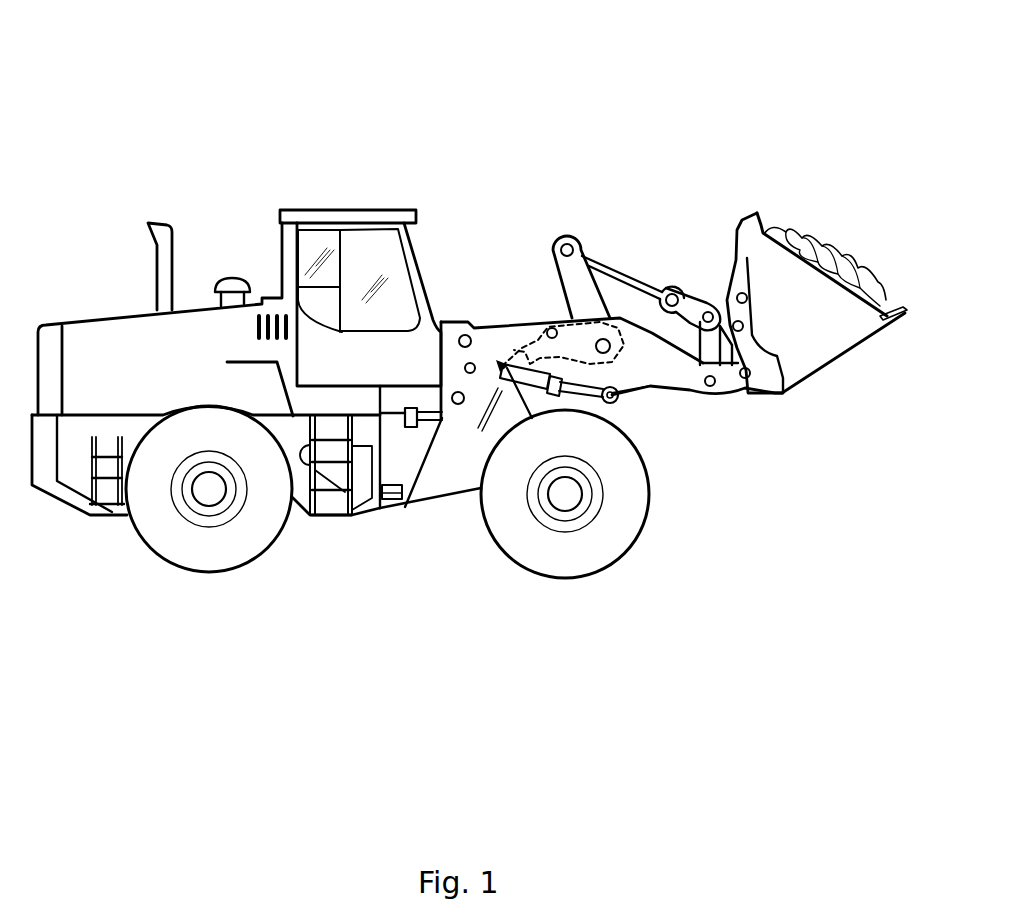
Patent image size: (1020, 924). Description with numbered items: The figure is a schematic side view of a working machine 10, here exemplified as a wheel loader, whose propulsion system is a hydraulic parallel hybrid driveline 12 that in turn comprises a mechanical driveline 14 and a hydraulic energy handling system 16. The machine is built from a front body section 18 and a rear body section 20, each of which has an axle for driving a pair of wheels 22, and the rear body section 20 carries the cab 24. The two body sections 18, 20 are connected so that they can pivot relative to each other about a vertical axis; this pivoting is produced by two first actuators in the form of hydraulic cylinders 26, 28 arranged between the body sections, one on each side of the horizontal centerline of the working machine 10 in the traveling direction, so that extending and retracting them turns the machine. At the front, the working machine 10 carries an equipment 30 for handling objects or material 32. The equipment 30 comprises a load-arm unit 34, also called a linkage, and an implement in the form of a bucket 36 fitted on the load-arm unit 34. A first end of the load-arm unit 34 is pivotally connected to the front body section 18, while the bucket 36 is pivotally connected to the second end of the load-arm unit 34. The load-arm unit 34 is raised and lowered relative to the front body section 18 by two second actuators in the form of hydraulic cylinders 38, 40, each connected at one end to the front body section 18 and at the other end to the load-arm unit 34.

The working machine 10 is at (209, 86).
The hydraulic parallel hybrid driveline 12 is at (262, 733).
The mechanical driveline 14 is at (290, 627).
The hydraulic energy handling system 16 is at (348, 627).
The front body section 18 is at (452, 465).
The rear body section 20 is at (73, 490).
The wheels 22 is at (183, 550).
The cab 24 is at (353, 218).
The hydraulic cylinder 26 is at (430, 420).
The hydraulic cylinder 28 is at (490, 409).
The equipment 30 is at (658, 197).
The material 32 is at (842, 272).
The load-arm unit 34 is at (663, 373).
The bucket 36 is at (836, 340).
The hydraulic cylinder 38 is at (582, 390).
The hydraulic cylinder 40 is at (631, 389).